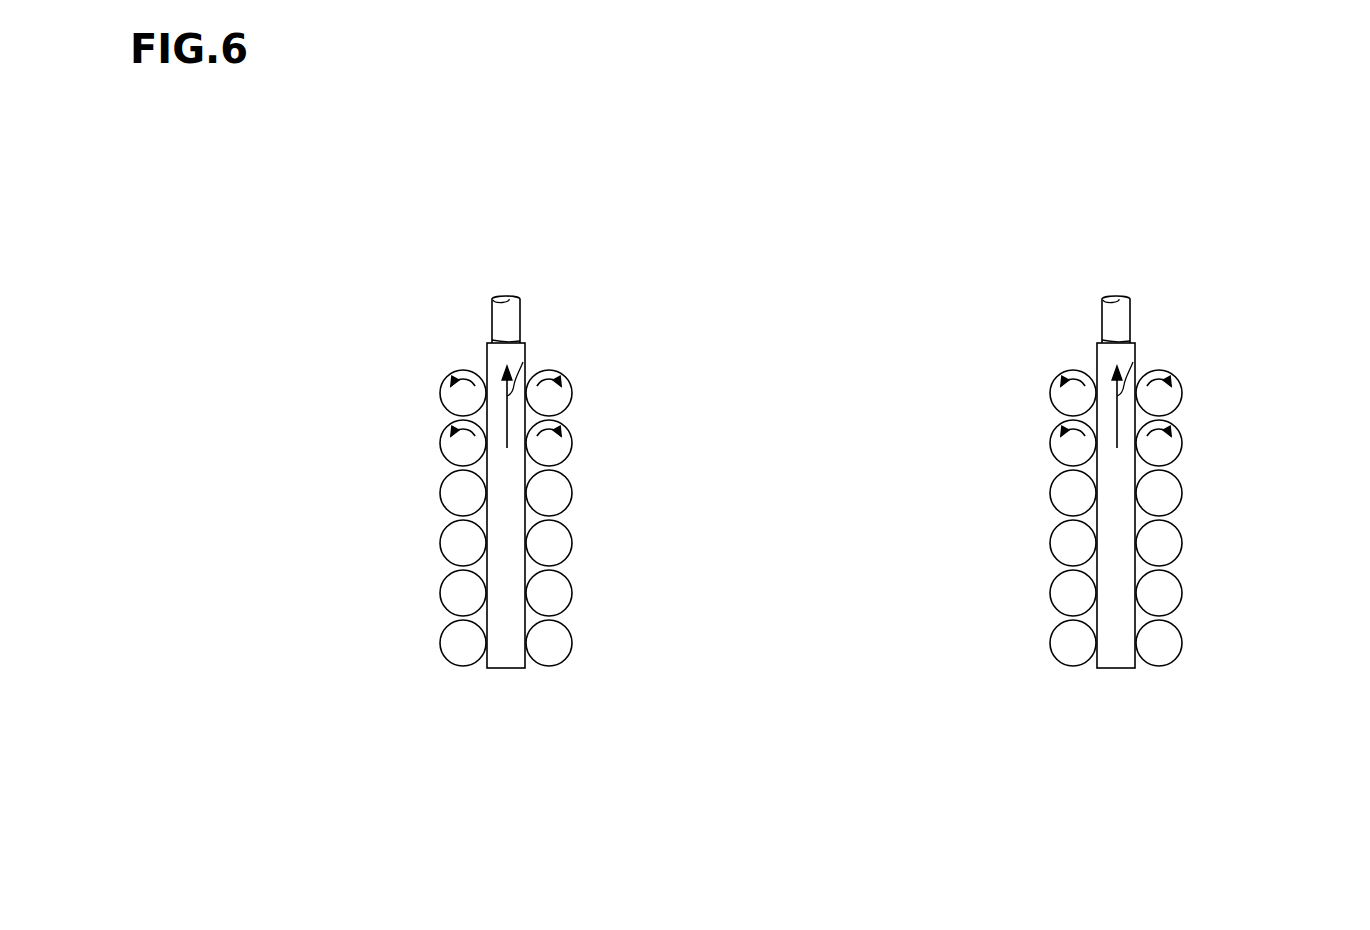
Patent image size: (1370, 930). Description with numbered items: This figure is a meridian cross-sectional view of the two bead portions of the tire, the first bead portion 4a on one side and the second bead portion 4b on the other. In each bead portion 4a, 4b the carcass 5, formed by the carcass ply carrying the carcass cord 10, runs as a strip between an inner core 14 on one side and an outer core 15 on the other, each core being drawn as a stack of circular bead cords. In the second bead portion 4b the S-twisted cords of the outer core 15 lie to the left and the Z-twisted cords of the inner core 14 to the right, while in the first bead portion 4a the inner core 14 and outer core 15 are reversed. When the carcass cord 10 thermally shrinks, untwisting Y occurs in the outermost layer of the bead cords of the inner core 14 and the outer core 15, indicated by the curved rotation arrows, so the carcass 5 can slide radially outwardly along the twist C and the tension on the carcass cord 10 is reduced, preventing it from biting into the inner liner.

The carcass cord 10 is at (502, 328).
The twisting device (11: cylindrical guide body) 5 is at (487, 355).
The second bead portion 4b is at (592, 380).
The first bead portion 4a is at (1202, 380).
The outer core 15 is at (458, 538).
The inner core 14 is at (550, 548).
The twist / contact point C is at (523, 362).
The untwisting Y is at (465, 430).